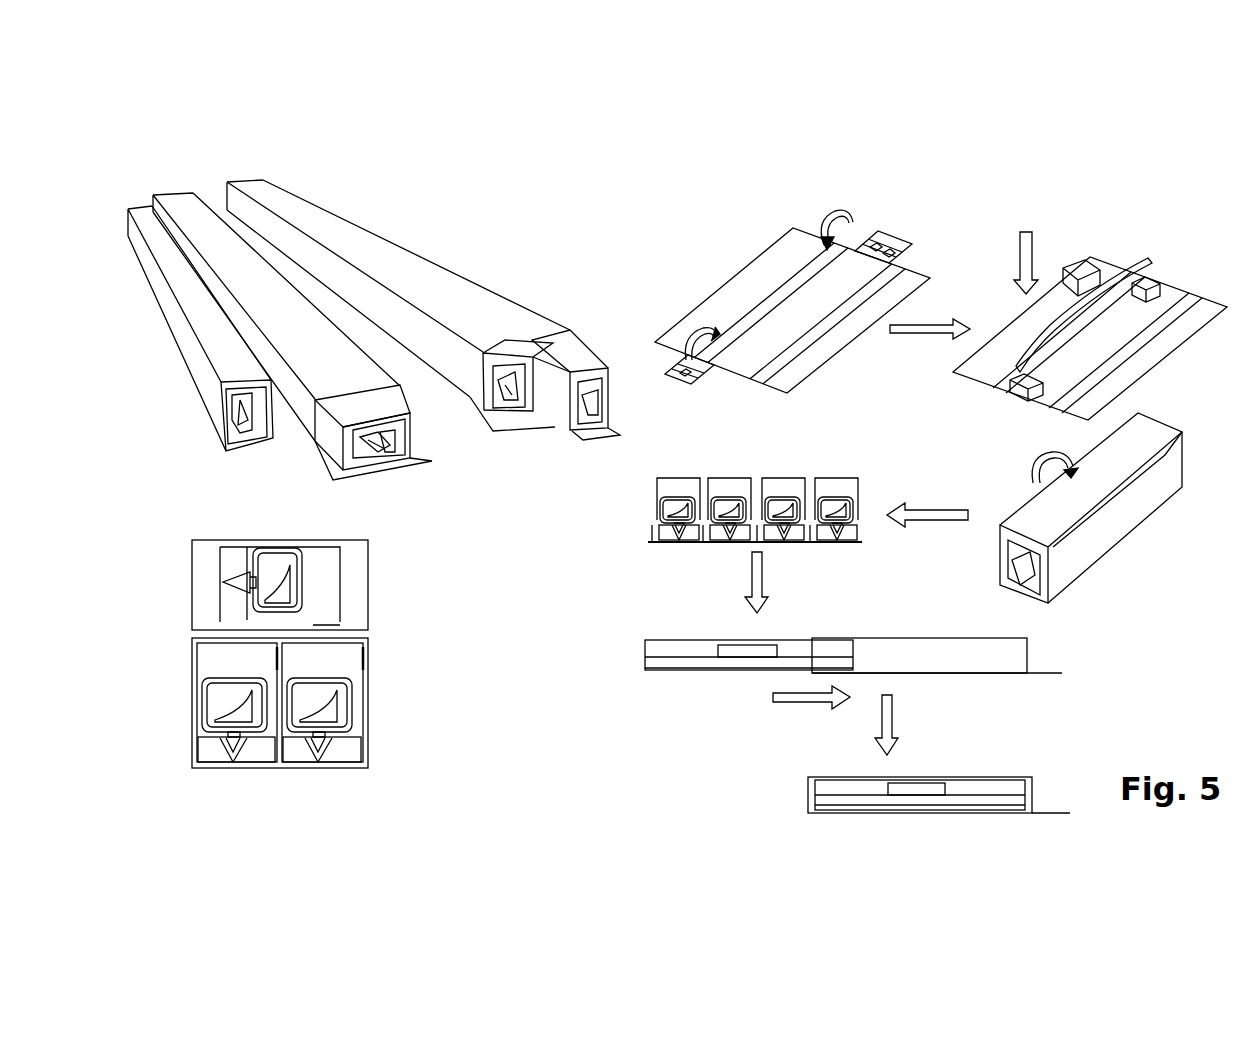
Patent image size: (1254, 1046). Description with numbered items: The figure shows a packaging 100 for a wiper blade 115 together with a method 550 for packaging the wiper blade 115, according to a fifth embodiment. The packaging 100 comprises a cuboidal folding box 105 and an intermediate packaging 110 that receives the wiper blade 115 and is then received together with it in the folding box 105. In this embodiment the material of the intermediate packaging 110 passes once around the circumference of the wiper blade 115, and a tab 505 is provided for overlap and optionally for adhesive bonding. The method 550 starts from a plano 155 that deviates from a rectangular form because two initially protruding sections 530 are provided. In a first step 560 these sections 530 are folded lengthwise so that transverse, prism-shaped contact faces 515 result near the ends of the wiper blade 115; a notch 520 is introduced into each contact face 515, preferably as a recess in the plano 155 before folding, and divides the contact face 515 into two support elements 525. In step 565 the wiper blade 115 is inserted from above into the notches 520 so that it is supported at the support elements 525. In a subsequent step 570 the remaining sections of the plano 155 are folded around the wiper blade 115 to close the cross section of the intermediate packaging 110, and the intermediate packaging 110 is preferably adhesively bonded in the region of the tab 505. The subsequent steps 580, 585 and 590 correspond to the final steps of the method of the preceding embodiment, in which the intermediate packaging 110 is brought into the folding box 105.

The packaging 100 is at (137, 198).
The folding box 105 is at (487, 311).
The intermediate packaging 110 is at (410, 432).
The wiper blade 115 is at (378, 444).
The plano 155 is at (711, 294).
The tab 505 is at (1163, 455).
The contact face 515 is at (1163, 311).
The notch 520 is at (873, 237).
The support element 525 is at (1143, 281).
The protruding section 530 is at (893, 247).
The method 550 is at (680, 152).
The first step 560 is at (850, 207).
The step 565 is at (1026, 230).
The step 570 is at (1023, 456).
The step 580 is at (936, 510).
The step 585 is at (752, 575).
The step 590 is at (893, 718).